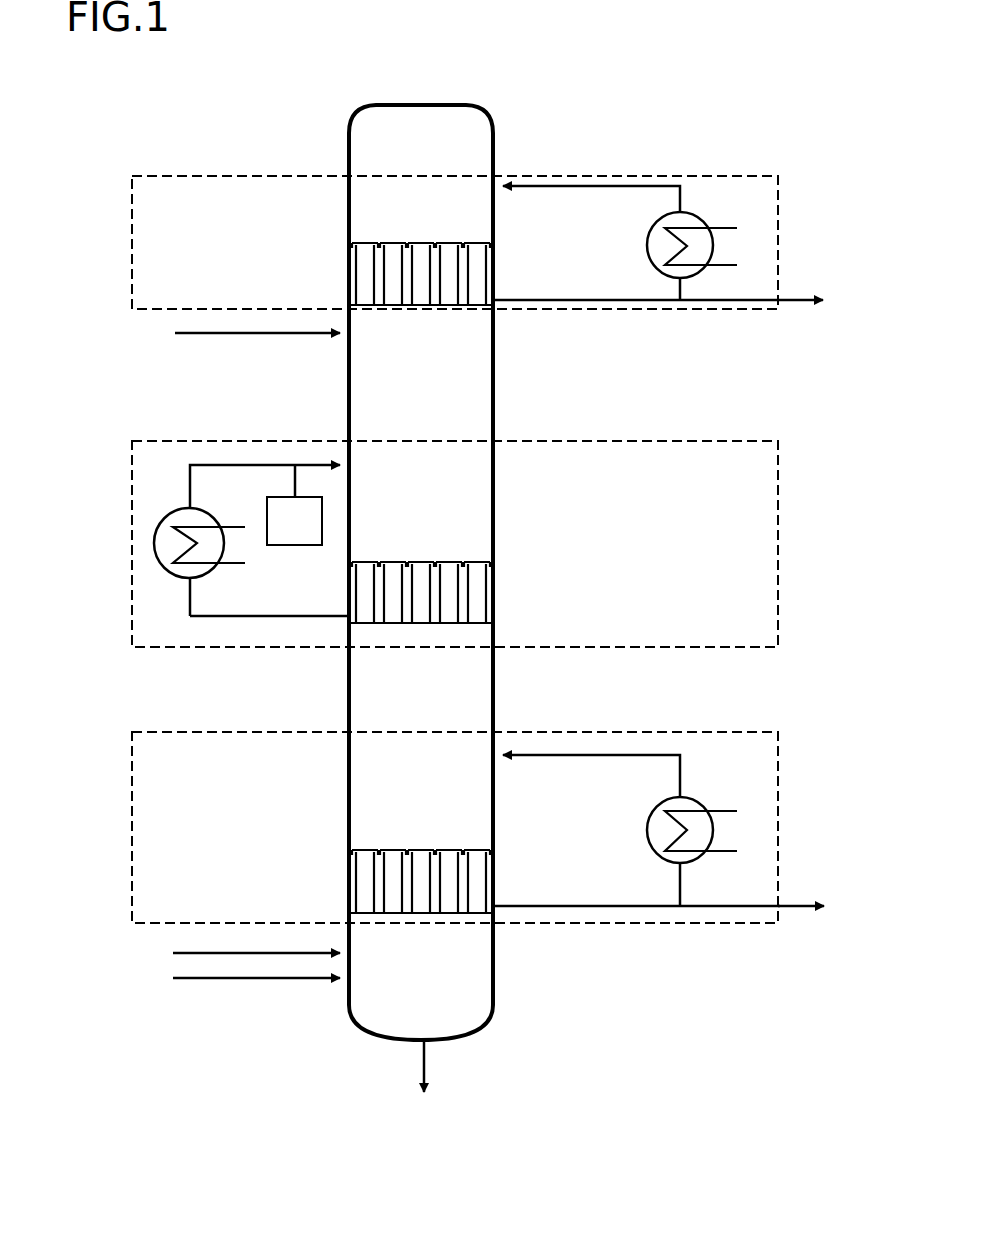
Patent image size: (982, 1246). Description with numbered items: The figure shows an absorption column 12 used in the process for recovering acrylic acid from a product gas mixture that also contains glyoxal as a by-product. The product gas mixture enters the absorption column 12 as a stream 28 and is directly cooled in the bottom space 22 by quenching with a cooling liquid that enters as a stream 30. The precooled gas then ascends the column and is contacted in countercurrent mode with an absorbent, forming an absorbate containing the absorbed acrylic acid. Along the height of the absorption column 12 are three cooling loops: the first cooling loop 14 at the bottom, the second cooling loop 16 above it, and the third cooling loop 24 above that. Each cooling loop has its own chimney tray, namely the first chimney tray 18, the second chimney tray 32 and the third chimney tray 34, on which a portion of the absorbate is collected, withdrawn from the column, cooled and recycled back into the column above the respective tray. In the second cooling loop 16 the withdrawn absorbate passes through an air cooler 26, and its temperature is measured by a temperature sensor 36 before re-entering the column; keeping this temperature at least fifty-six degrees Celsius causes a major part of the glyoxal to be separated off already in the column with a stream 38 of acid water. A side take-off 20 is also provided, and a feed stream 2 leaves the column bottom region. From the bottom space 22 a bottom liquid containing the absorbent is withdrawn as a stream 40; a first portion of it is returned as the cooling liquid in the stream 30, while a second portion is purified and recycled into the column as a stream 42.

The absorption column 12 is at (507, 116).
The third cooling loop 24 is at (222, 176).
The second cooling loop 16 is at (255, 440).
The first cooling loop 14 is at (218, 732).
The stream 42 is at (242, 335).
The third chimney tray 34 is at (462, 306).
The second chimney tray 32 is at (460, 625).
The first chimney tray 18 is at (450, 915).
The stream 38 is at (800, 301).
The air cooler 26 is at (205, 570).
The temperature sensor 36 is at (294, 505).
The side take-off 20 is at (590, 908).
The feed stream F 2 is at (800, 910).
The stream 30 is at (197, 950).
The stream 28 is at (205, 980).
The bottom space 22 is at (450, 1005).
The stream 40 is at (427, 1067).